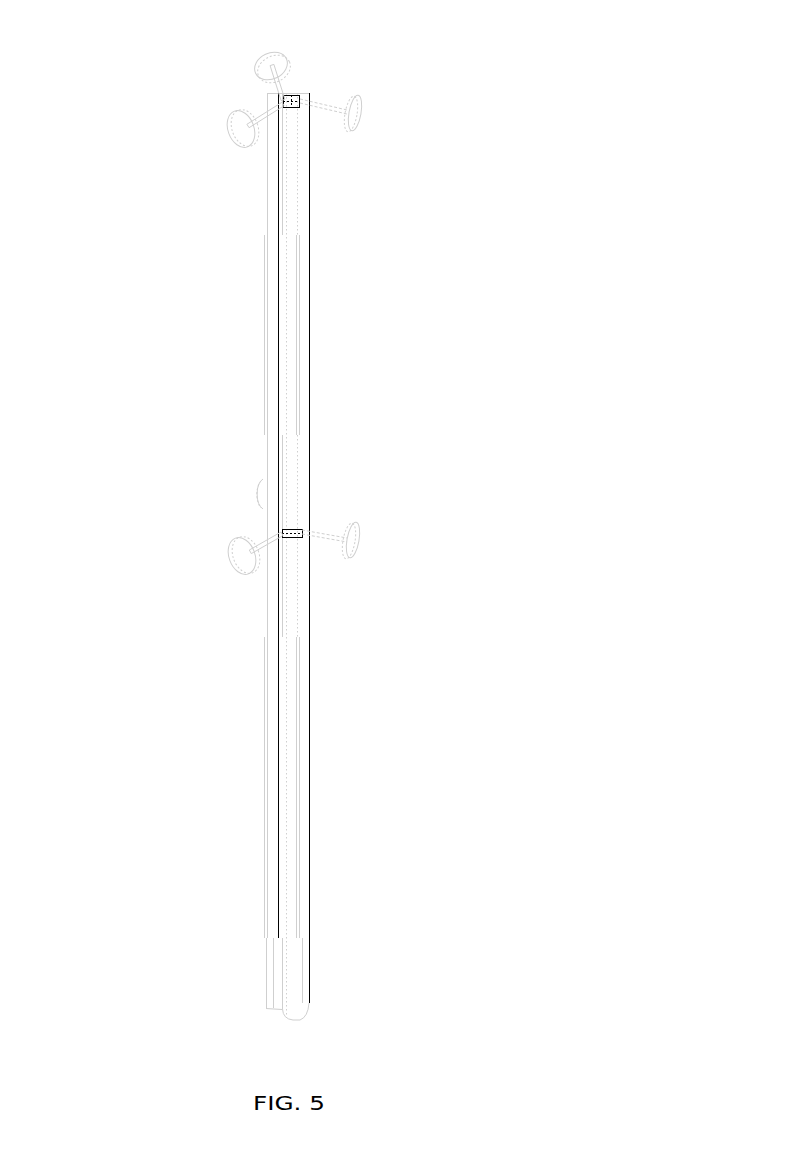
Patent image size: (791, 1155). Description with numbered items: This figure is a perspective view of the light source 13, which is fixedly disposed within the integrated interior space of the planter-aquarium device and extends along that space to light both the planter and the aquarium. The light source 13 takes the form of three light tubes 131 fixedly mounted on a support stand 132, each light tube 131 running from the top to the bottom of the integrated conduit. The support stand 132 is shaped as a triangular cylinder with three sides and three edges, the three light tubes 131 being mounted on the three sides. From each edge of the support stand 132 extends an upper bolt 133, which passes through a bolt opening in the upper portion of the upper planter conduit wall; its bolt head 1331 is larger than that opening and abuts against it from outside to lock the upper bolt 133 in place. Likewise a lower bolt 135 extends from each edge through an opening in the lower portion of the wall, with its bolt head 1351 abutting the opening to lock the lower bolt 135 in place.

The light source 13 is at (330, 453).
The light tube 131 is at (305, 93).
The support stand 132 is at (295, 103).
The upper bolt 133 is at (327, 107).
The bolt head 1331 is at (358, 113).
The lower bolt 135 is at (312, 535).
The bolt head 1351 is at (353, 543).